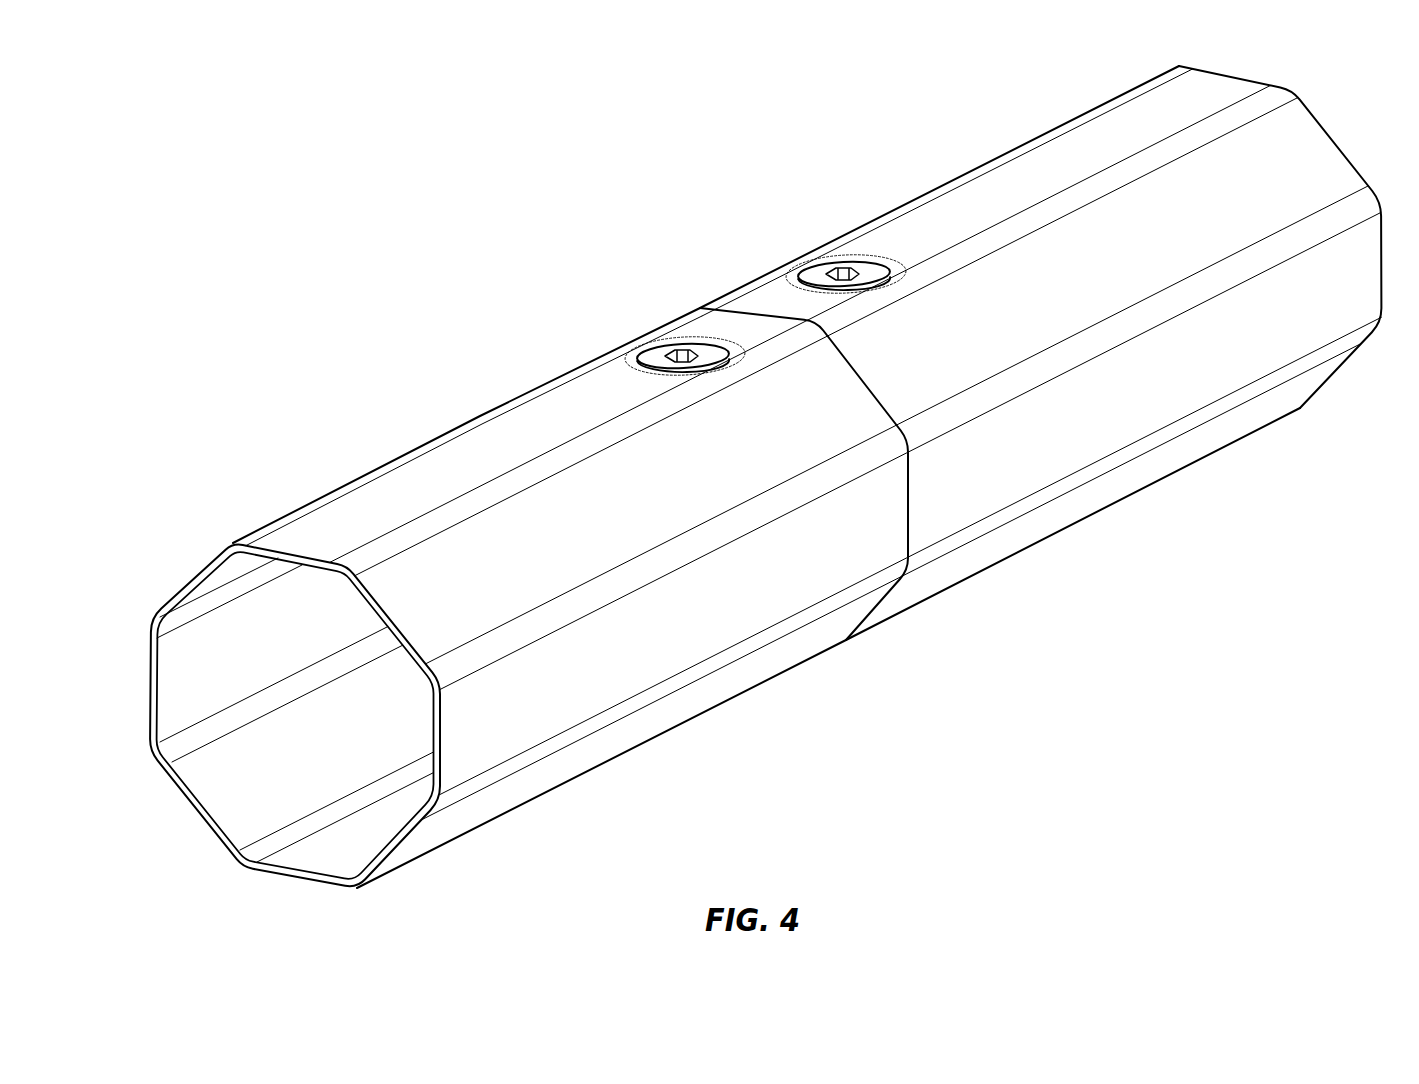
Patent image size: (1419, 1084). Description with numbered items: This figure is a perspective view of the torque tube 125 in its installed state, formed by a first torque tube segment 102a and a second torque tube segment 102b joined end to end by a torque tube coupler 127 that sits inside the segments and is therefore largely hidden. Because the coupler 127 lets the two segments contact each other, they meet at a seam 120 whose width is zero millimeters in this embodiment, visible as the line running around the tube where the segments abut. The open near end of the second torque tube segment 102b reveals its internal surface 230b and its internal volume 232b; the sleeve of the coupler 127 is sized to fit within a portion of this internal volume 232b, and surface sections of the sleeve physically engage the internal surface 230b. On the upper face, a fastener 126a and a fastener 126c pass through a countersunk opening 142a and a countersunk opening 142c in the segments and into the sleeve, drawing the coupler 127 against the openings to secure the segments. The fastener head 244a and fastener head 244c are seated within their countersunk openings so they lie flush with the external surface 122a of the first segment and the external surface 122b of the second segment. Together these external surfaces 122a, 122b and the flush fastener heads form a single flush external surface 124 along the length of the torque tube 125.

The torque tube 125 is at (204, 122).
The first torque tube segment 102a is at (1054, 150).
The second torque tube segment 102b is at (303, 533).
The seam 120 is at (880, 606).
The external surface of first torque tube segment 122a is at (1155, 468).
The external surface of second torque tube segment 122b is at (596, 748).
The flush external surface 124 is at (447, 455).
The torque tube coupler 127 is at (603, 362).
The fastener 126a is at (791, 273).
The fastener 126c is at (630, 355).
The countersunk opening 142a is at (801, 275).
The countersunk opening 142c is at (634, 357).
The fastener head 244a is at (858, 265).
The fastener head 244c is at (697, 347).
The internal surface of second torque tube segment 230b is at (205, 772).
The internal volume of second torque tube segment 232b is at (225, 802).